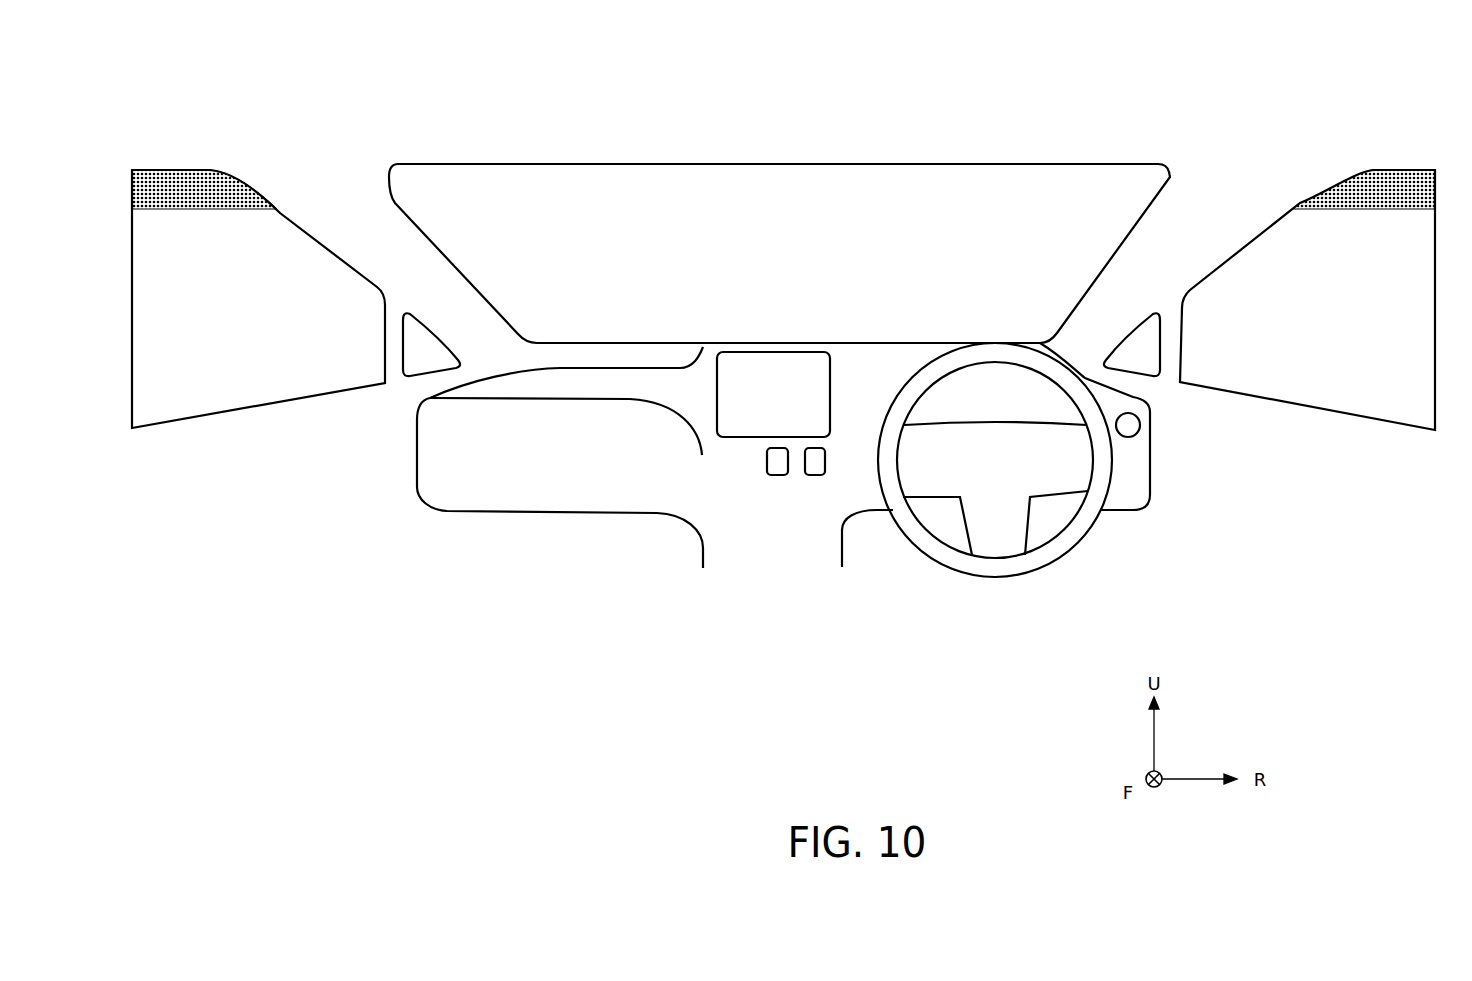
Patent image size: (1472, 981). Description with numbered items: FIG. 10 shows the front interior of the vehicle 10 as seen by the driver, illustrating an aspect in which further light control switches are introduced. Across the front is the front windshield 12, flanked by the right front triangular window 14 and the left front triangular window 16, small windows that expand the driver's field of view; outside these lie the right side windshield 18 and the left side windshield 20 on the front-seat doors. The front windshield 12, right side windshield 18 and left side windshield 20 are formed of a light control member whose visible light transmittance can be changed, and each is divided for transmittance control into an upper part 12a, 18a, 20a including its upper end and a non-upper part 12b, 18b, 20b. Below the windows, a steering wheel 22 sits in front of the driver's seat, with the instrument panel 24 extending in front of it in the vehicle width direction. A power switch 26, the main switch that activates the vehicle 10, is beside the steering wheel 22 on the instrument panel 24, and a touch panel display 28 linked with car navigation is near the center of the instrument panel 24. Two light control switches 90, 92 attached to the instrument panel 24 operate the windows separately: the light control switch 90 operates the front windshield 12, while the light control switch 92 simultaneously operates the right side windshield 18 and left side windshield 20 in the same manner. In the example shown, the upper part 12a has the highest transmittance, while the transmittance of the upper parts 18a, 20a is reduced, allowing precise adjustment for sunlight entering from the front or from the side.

The vehicle 10 is at (620, 75).
The front windshield 12 is at (955, 164).
The upper part 12a is at (977, 183).
The non-upper part 12b is at (983, 250).
The right front triangular window 14 is at (1157, 307).
The left front triangular window 16 is at (407, 307).
The right side windshield 18 is at (1342, 180).
The upper part 18a is at (1370, 192).
The non-upper part 18b is at (1410, 280).
The left side windshield 20 is at (243, 183).
The upper part 20a is at (182, 187).
The non-upper part 20b is at (148, 283).
The steering wheel 22 is at (957, 575).
The instrument panel 24 is at (808, 525).
The power switch 26 is at (1135, 435).
The touch panel display 28 is at (732, 437).
The light control switch 90 is at (777, 475).
The light control switch 92 is at (812, 475).